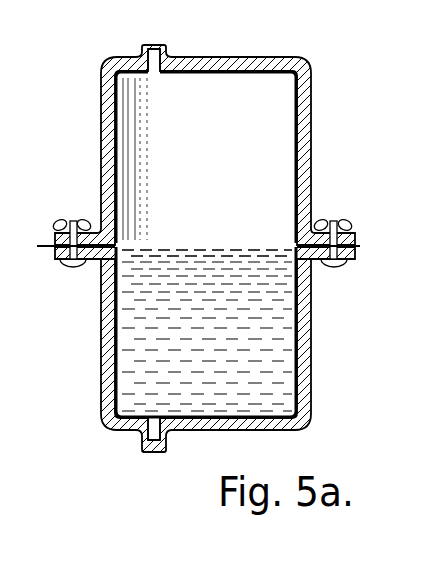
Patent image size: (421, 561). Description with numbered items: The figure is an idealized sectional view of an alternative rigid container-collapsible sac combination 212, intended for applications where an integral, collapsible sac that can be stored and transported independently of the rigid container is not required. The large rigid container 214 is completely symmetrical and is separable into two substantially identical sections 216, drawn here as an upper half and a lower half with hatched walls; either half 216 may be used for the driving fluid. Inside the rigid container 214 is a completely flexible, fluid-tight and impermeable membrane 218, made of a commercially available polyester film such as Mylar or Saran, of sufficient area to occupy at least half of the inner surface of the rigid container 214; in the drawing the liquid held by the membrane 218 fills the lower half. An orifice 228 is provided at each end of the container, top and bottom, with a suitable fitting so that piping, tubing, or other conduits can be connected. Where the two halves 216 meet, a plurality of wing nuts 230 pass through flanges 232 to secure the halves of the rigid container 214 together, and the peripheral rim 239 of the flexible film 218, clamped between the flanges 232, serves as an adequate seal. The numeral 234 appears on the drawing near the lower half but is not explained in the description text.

The rigid container-collapsible sac combination 212 is at (329, 96).
The rigid container 214 is at (203, 355).
The sections 216 is at (104, 167).
The flexible membrane 218 is at (297, 374).
The orifice 228 is at (141, 56).
The wing nuts 230 is at (62, 226).
The flanges 232 is at (56, 254).
The lower housing wall 234 is at (322, 268).
The peripheral rim 239 is at (64, 245).